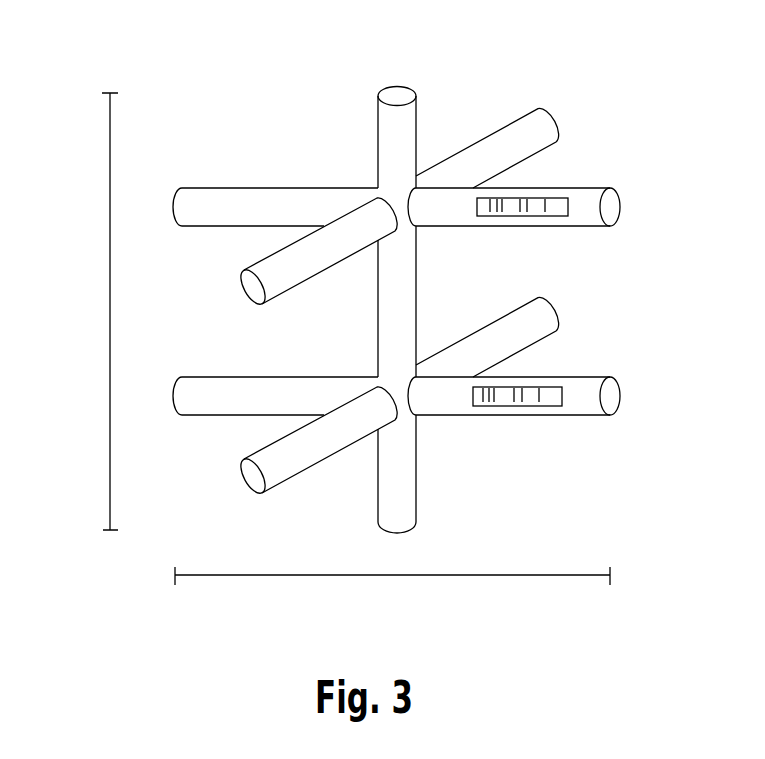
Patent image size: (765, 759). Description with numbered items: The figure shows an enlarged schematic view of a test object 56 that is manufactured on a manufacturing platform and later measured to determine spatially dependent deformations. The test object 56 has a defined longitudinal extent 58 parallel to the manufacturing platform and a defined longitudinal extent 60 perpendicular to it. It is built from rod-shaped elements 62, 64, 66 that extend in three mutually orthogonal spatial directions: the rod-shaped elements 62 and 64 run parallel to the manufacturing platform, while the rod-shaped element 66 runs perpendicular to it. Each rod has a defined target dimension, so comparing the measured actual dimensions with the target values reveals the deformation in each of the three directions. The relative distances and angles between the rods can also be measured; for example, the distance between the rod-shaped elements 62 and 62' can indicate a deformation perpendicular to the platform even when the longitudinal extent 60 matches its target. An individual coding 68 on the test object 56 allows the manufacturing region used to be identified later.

The test object 56 is at (555, 88).
The longitudinal extent 58 is at (410, 577).
The longitudinal extent 60 is at (110, 310).
The rod-shaped element 62 is at (552, 207).
The rod-shaped element 62' is at (555, 396).
The rod-shaped element 64 is at (548, 132).
The rod-shaped element 66 is at (380, 131).
The individual coding 68 is at (549, 401).